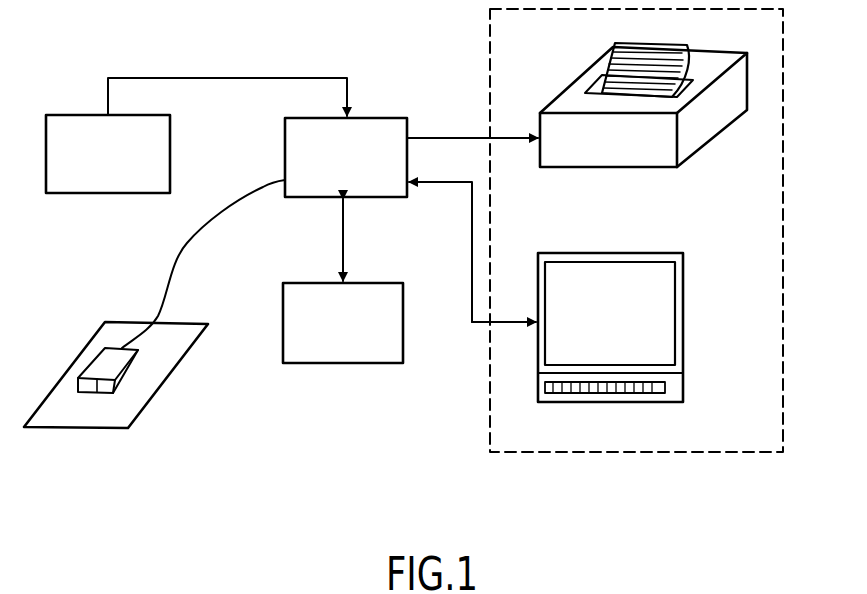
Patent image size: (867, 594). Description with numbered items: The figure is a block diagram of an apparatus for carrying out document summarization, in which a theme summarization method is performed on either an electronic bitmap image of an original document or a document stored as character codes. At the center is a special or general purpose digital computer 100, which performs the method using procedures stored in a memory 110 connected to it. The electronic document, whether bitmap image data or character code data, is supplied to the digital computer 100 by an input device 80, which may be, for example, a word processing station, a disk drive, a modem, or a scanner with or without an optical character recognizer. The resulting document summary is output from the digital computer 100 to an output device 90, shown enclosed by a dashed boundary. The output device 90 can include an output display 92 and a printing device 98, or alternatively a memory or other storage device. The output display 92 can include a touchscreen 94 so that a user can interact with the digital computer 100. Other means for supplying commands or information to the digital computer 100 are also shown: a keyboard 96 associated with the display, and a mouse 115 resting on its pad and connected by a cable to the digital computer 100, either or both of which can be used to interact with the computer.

The input device 80 is at (76, 114).
The digital computer 100 is at (387, 117).
The memory 110 is at (317, 365).
The mouse 115 is at (93, 367).
The output device 90 is at (670, 454).
The printing device 98 is at (562, 93).
The output display 92 is at (645, 373).
The touchscreen 94 is at (663, 278).
The keyboard 96 is at (592, 388).